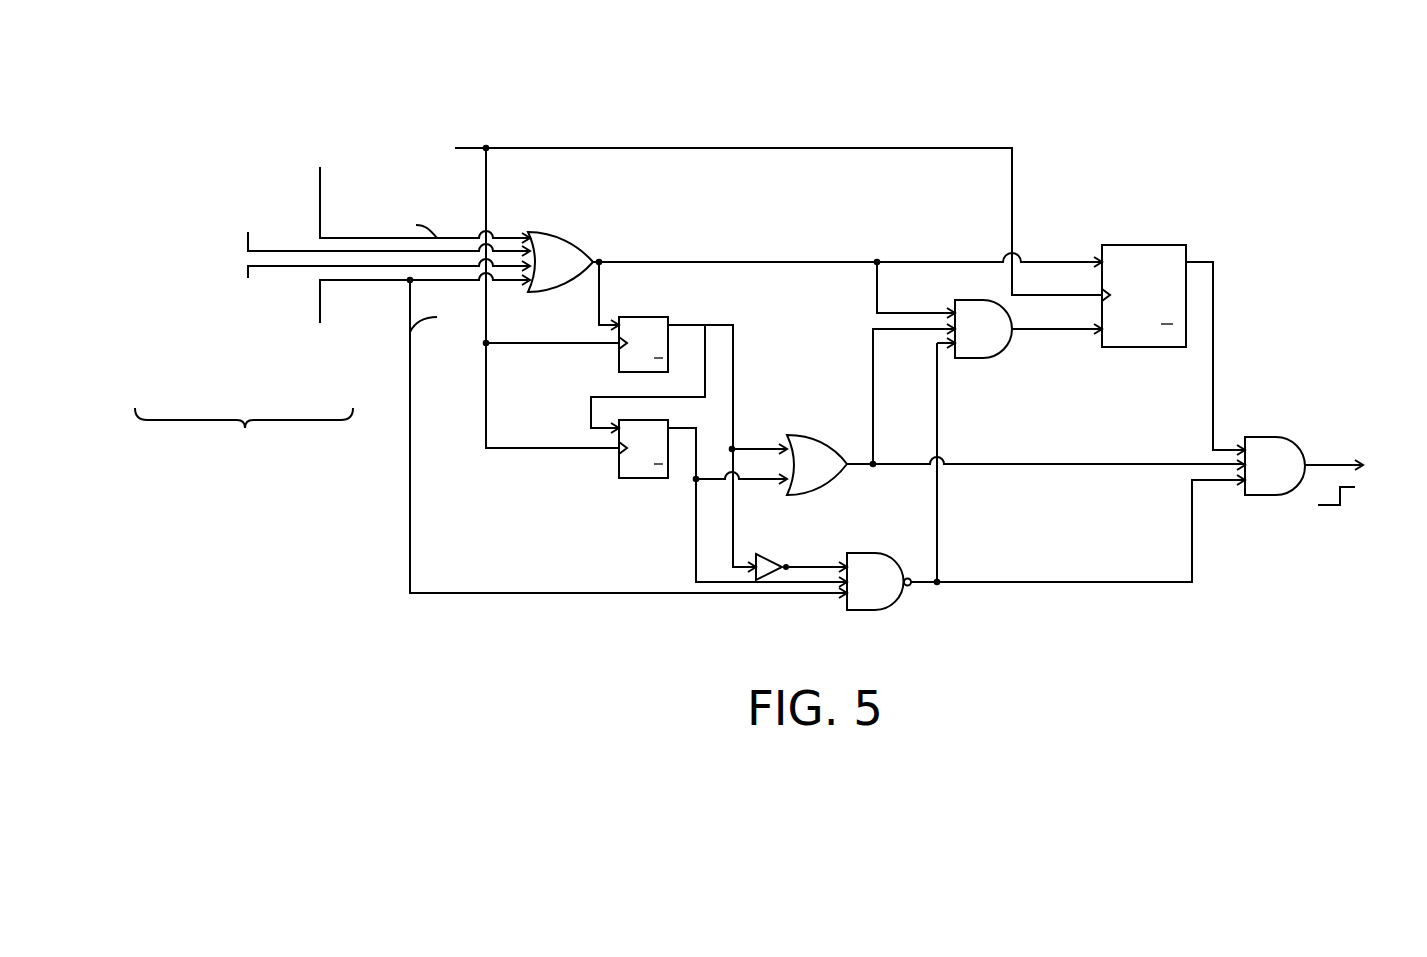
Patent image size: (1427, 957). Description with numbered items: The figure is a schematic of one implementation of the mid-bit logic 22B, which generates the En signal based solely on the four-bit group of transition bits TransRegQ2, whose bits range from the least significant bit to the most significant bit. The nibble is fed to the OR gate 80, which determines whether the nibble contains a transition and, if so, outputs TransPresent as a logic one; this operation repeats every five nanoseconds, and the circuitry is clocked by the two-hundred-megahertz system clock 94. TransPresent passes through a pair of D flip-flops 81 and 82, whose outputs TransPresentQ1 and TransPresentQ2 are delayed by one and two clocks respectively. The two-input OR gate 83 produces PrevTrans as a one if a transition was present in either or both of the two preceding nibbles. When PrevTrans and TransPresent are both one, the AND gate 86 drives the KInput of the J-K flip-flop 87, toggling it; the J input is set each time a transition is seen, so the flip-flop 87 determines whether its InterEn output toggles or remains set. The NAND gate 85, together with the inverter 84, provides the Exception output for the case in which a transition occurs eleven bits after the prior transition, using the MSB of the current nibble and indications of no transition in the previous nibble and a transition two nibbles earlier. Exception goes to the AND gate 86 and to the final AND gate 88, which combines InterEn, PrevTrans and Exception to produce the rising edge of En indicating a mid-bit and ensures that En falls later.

The Midbit Logic 22B is at (305, 72).
The 200 MHz clock 94 is at (463, 147).
The OR gate 80 is at (551, 233).
The D flip-flop 81 is at (619, 358).
The D flip-flop 82 is at (619, 461).
The 2-input OR gate 83 is at (803, 436).
The inverter 84 is at (766, 555).
The NAND gate 85 is at (862, 553).
The AND gate 86 is at (970, 300).
The J-K flip-flop 87 is at (1125, 245).
The final AND gate 88 is at (1267, 437).